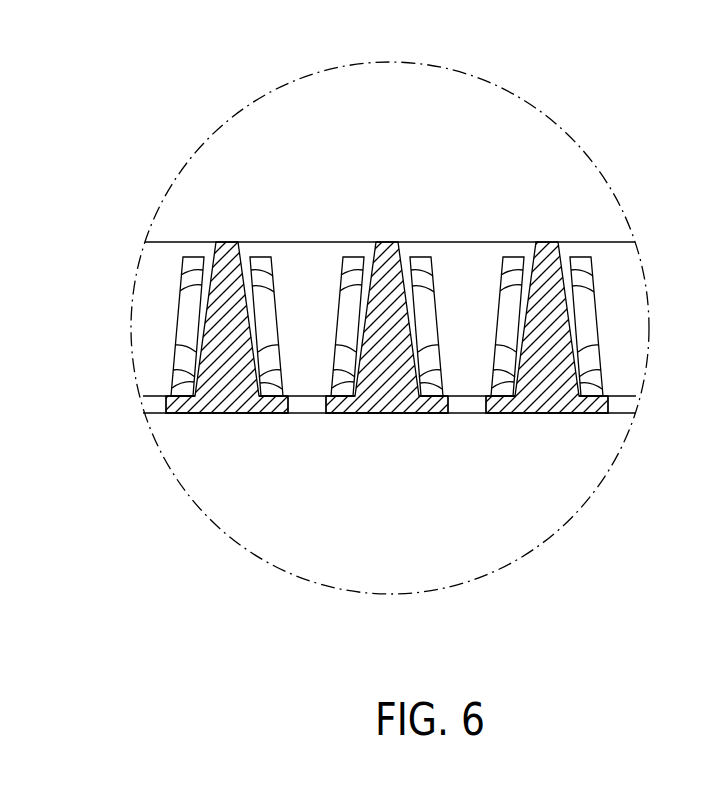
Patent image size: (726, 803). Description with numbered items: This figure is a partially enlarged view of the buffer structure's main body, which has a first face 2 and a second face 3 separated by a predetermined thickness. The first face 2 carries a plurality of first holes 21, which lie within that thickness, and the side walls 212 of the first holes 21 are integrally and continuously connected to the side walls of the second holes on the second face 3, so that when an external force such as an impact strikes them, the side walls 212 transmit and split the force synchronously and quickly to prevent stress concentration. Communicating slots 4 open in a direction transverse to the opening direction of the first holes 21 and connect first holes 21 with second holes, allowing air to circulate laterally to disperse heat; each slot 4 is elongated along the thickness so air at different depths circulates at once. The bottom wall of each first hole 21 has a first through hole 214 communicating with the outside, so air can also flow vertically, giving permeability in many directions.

The first face 2 is at (400, 281).
The first hole 21 is at (405, 281).
The side wall 212 is at (305, 262).
The first through hole 214 is at (475, 415).
The second face 3 is at (223, 413).
The communicating slot 4 is at (592, 270).